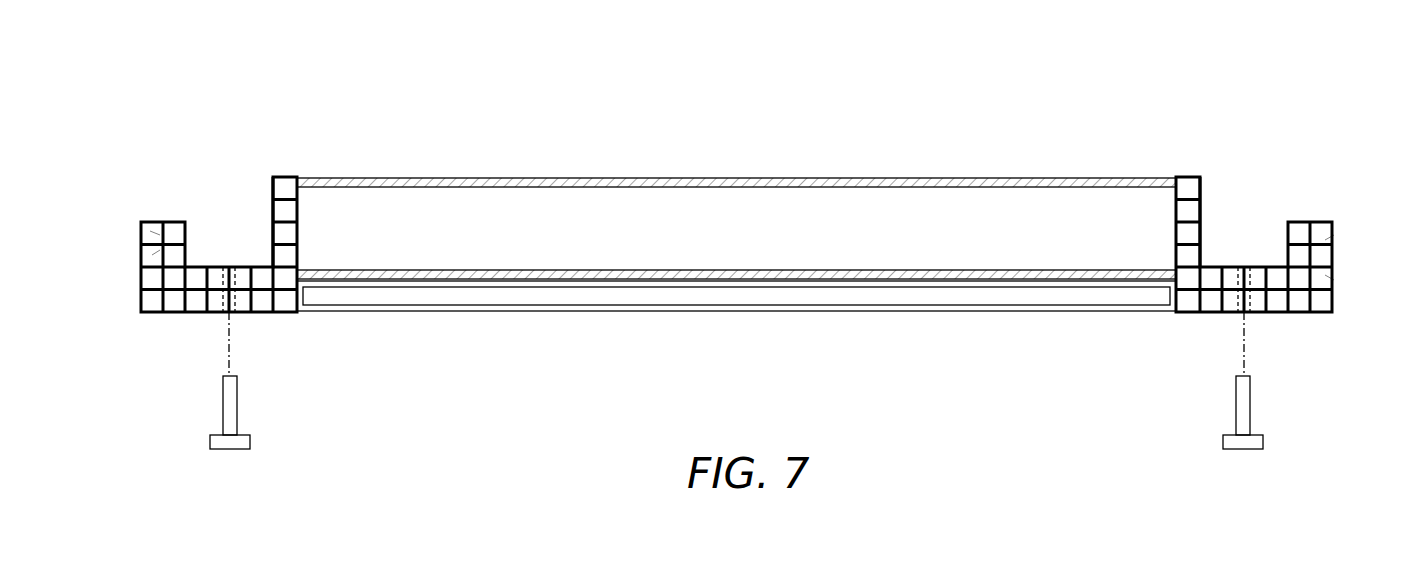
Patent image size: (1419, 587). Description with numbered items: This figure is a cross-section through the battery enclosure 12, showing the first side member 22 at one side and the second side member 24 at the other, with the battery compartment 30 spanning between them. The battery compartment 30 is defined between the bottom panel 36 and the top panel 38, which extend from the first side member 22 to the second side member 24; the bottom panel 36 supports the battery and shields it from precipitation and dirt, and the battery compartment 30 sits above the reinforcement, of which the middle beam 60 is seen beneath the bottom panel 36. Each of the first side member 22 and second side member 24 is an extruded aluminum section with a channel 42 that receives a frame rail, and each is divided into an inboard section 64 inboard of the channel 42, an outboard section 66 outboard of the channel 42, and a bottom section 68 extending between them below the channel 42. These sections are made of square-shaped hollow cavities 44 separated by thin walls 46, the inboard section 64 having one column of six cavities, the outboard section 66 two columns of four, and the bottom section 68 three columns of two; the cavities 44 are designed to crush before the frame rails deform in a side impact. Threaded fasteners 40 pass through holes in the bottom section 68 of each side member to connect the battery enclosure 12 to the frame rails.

The battery enclosure 12 is at (1030, 52).
The first side member 22 is at (143, 312).
The second side member 24 is at (1330, 312).
The battery compartment 30 is at (793, 220).
The bottom panel 36 is at (380, 271).
The top panel 38 is at (611, 177).
The fasteners 40 is at (210, 442).
The channel 42 is at (230, 213).
The hollow cavities 44 is at (152, 255).
The walls 46 is at (1334, 280).
The middle beam 60 is at (655, 312).
The inboard section 64 is at (287, 160).
The outboard section 66 is at (162, 207).
The bottom section 68 is at (223, 318).